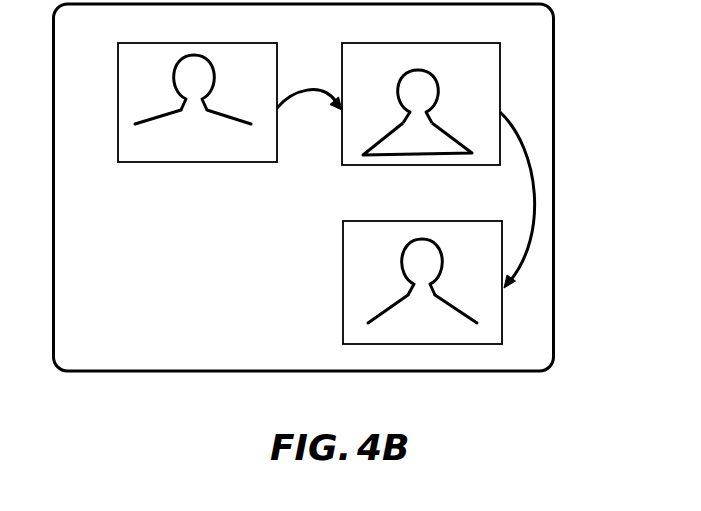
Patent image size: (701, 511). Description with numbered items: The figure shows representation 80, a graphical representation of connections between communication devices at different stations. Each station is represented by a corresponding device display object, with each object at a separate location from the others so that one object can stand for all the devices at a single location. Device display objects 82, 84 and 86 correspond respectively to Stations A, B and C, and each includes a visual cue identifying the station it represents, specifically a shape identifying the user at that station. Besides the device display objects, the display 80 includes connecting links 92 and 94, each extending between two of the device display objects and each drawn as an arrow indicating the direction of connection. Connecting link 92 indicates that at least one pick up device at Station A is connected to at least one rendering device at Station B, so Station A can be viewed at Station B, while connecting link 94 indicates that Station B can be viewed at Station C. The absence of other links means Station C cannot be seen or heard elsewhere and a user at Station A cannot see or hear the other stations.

The representation 80 is at (553, 80).
The device display object 82 is at (197, 166).
The device display object 84 is at (473, 42).
The device display object 86 is at (342, 260).
The connecting link 92 is at (310, 97).
The connecting link 94 is at (530, 182).